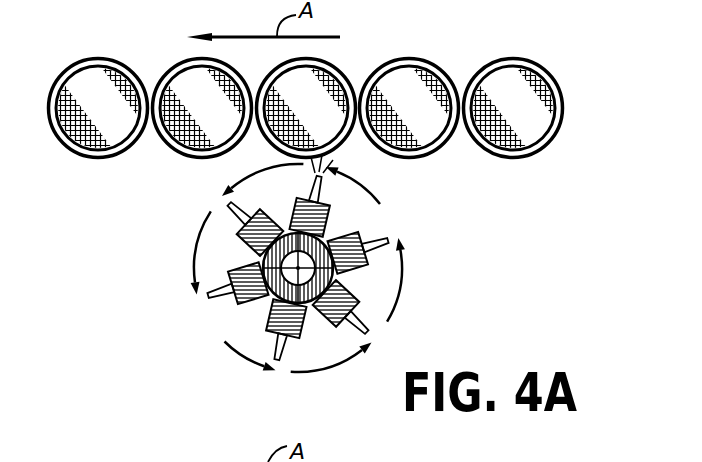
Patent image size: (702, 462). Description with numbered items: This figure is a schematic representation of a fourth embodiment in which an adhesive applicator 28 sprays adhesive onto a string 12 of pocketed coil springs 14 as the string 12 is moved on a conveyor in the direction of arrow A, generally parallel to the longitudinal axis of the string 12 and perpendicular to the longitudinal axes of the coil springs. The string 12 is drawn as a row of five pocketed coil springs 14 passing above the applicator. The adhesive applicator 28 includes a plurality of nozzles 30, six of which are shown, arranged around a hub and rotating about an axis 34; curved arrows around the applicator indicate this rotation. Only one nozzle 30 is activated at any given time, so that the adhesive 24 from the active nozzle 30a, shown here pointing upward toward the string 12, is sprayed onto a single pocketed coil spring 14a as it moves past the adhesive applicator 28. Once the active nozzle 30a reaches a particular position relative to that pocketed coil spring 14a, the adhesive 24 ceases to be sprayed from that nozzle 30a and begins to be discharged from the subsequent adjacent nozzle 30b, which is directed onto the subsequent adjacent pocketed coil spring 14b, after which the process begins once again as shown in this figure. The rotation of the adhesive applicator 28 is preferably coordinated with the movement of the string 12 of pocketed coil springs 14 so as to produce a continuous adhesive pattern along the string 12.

The string 12 is at (345, 85).
The pocketed coil springs 14 is at (102, 55).
The single pocketed coil spring 14a is at (334, 66).
The subsequent adjacent pocketed coil spring 14b is at (442, 66).
The adhesive 24 is at (337, 153).
The adhesive applicator 28 is at (221, 356).
The nozzles 30 is at (210, 296).
The active nozzle 30a is at (323, 193).
The subsequent adjacent nozzle 30b is at (389, 241).
The axis 34 is at (266, 295).